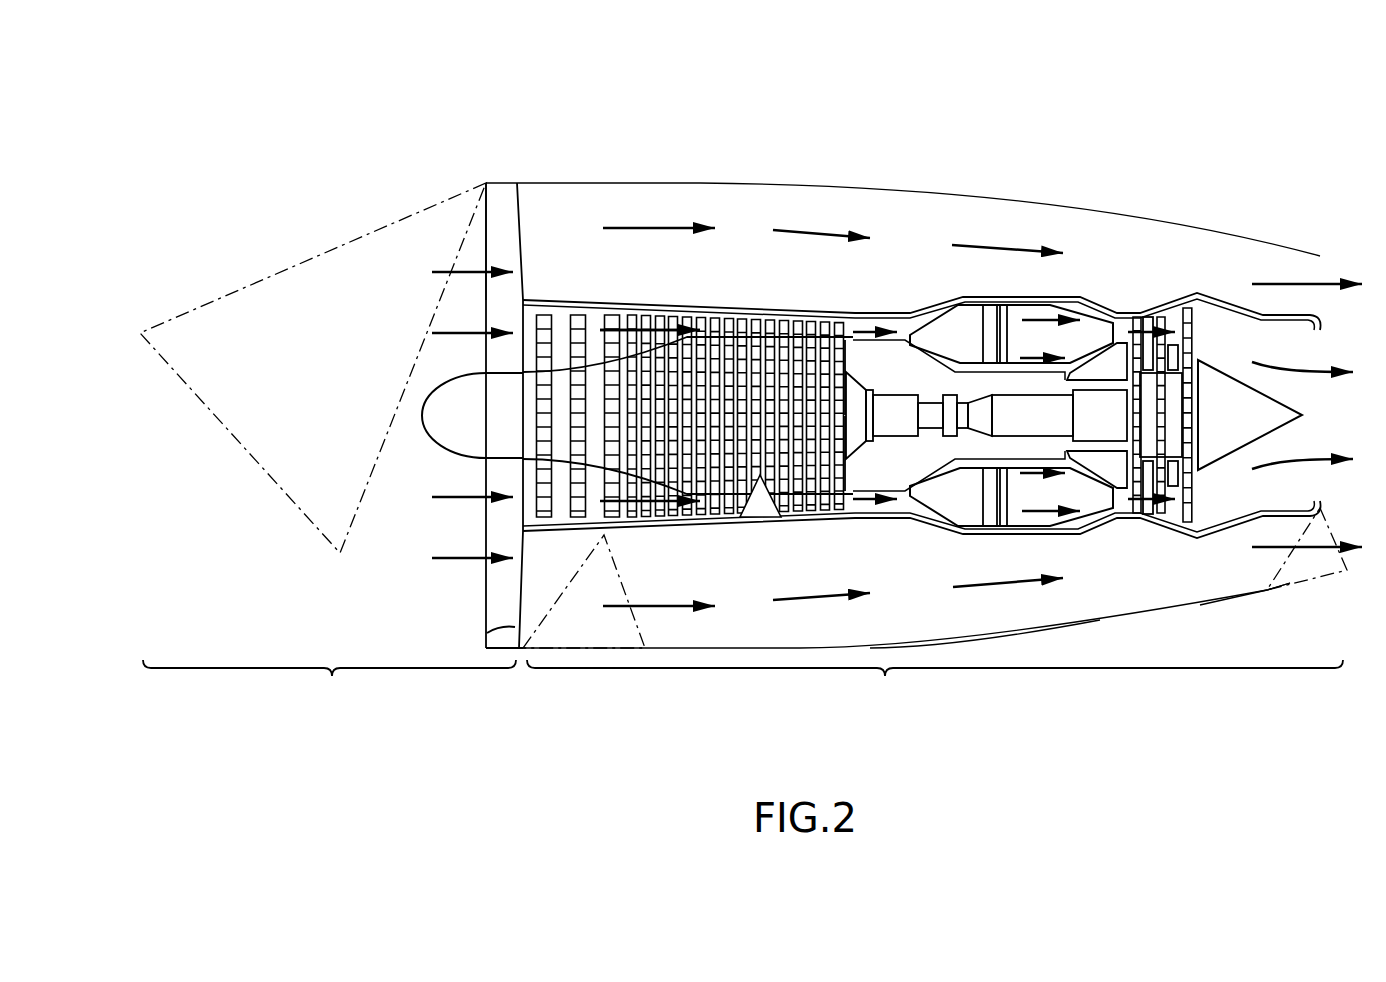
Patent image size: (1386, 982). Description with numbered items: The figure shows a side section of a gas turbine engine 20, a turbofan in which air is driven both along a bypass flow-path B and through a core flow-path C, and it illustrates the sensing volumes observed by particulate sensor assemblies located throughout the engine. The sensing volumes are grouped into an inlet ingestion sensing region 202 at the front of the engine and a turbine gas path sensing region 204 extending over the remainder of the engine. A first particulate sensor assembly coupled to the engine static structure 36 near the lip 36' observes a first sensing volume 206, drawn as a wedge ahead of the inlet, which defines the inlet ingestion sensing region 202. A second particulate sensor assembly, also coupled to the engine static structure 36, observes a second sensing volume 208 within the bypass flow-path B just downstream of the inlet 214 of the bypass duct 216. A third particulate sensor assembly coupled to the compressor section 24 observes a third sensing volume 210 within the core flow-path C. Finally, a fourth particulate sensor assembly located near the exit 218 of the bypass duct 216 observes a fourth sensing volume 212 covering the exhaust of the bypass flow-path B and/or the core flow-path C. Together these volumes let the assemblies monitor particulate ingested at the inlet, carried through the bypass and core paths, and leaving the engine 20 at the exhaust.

The gas turbine engine 20 is at (1002, 125).
The compressor section 24 is at (738, 287).
The engine static structure 36 is at (442, 415).
The lip 36' is at (484, 194).
The inlet ingestion sensing region 202 is at (329, 686).
The turbine gas path sensing region 204 is at (935, 686).
The first sensing volume 206 is at (310, 266).
The second sensing volume 208 is at (622, 625).
The third sensing volume 210 is at (752, 516).
The fourth sensing volume 212 is at (1300, 570).
The inlet of bypass duct 214 is at (488, 630).
The bypass duct 216 is at (942, 627).
The exit of bypass duct 218 is at (1250, 607).
The bypass flow-path B is at (625, 232).
The core flow-path C is at (625, 330).